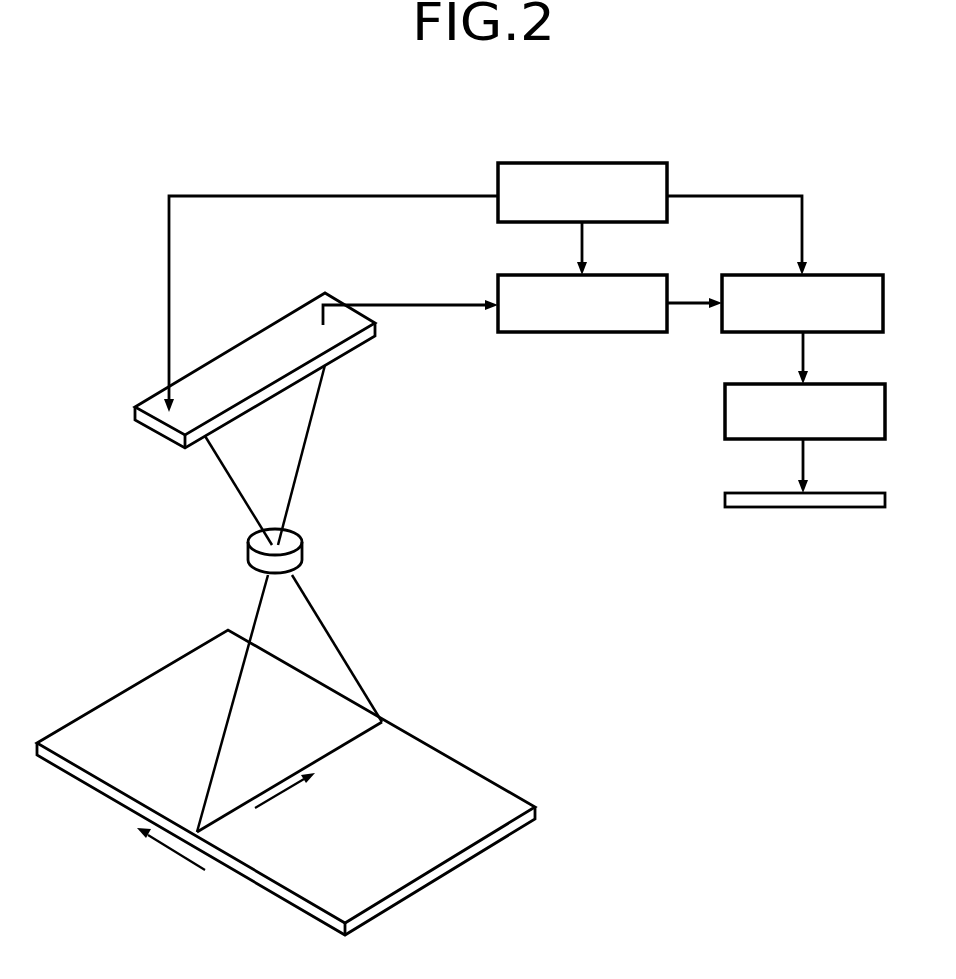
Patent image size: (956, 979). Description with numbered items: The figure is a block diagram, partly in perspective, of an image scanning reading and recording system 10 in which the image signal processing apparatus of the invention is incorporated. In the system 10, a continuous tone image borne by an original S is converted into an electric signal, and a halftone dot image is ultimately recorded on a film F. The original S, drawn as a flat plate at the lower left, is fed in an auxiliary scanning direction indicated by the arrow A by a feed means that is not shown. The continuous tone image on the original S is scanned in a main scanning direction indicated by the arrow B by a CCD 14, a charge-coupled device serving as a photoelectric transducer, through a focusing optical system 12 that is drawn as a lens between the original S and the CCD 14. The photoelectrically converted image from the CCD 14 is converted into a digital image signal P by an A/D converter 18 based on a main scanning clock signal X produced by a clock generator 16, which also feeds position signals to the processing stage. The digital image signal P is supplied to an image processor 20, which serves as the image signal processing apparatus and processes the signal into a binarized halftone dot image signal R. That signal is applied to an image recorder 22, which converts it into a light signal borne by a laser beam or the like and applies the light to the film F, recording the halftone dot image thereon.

The image scanning reading and recording system 10 is at (172, 130).
The focusing optical system 12 is at (303, 545).
The CCD 14 is at (363, 337).
The clock generator 16 is at (548, 163).
The A/D converter 18 is at (518, 275).
The image processor 20 is at (767, 275).
The image recorder 22 is at (743, 383).
The original S is at (435, 745).
The film F is at (752, 492).